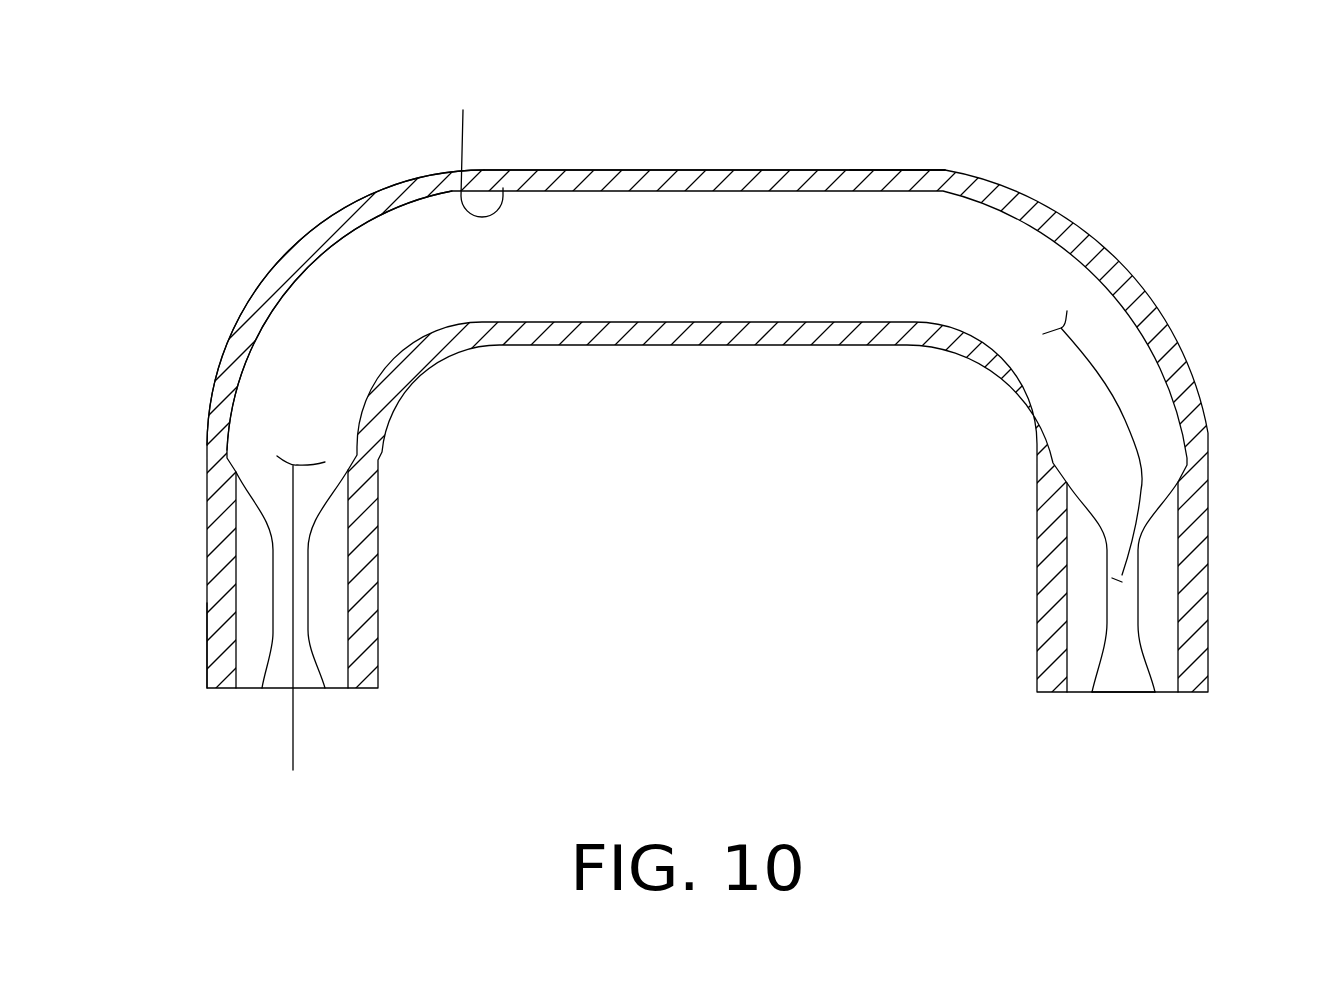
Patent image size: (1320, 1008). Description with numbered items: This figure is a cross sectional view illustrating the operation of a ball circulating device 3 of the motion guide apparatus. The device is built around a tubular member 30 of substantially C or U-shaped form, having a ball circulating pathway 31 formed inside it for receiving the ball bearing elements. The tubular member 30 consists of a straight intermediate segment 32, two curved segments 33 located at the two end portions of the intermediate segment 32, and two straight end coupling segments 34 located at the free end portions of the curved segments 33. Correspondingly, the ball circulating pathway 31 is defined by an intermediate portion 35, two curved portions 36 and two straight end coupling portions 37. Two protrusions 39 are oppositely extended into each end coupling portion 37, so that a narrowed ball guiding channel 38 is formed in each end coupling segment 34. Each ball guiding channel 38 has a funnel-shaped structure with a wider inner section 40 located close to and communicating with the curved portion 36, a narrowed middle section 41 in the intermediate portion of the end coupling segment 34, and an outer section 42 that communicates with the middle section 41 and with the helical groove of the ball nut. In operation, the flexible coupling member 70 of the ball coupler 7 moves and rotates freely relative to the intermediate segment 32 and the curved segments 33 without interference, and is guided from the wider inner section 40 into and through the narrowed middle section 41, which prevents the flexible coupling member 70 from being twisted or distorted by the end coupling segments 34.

The ball circulating device 3 is at (968, 173).
The ball coupler 7 is at (1087, 360).
The tubular member 30 is at (572, 170).
The ball circulating pathway 31 is at (471, 141).
The intermediate segment 32 is at (877, 172).
The curved segment 33 is at (263, 290).
The end coupling segment 34 is at (207, 603).
The intermediate portion 35 is at (707, 293).
The curved portion 36 is at (342, 275).
The end coupling portion 37 is at (348, 592).
The ball guiding channel 38 is at (262, 665).
The protrusion 39 is at (253, 558).
The inner section 40 is at (1153, 520).
The middle section 41 is at (1117, 580).
The outer section 42 is at (1122, 682).
The flexible coupling member 70 is at (1130, 423).